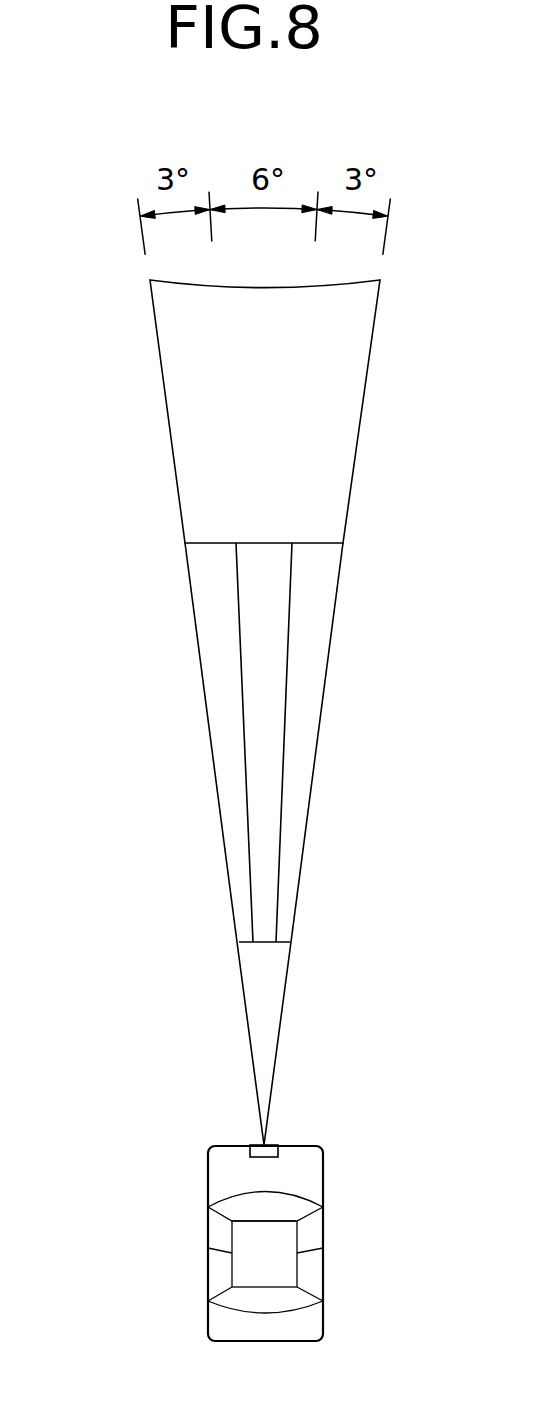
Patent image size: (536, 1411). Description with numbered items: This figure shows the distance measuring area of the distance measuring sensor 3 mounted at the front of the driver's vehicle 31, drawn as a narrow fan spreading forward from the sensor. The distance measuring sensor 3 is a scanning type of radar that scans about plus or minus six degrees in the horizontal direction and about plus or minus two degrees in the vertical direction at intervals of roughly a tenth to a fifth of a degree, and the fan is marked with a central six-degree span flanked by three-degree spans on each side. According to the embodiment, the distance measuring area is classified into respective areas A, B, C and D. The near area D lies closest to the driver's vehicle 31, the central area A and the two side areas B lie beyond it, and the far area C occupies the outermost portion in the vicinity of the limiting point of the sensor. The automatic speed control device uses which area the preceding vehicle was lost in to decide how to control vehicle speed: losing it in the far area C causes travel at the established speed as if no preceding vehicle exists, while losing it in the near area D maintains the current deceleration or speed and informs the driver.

The distance measuring sensor 3 is at (273, 1143).
The driver's vehicle 31 is at (323, 1228).
The distance measuring area A is at (264, 742).
The distance measuring area B is at (264, 742).
The distance measuring area C is at (265, 411).
The distance measuring area D is at (264, 1043).